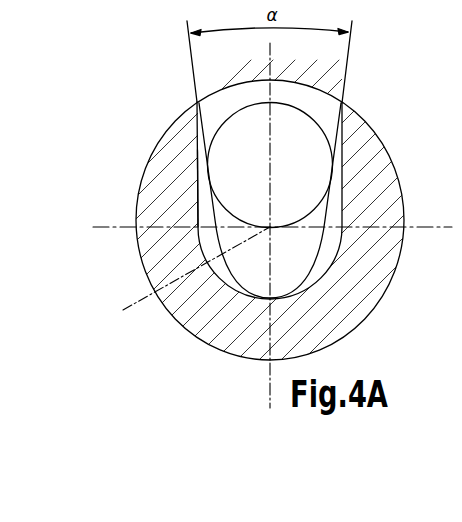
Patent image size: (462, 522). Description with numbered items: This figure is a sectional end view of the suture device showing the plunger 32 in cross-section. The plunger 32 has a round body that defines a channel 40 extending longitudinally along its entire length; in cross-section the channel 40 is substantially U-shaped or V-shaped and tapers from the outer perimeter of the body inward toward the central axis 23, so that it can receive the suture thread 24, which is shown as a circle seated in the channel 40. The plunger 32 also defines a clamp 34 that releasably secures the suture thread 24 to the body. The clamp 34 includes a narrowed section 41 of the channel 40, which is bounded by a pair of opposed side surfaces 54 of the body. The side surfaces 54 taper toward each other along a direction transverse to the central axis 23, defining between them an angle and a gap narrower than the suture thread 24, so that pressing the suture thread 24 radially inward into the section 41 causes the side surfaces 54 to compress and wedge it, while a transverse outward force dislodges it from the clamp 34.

The central axis 23 is at (181, 275).
The suture thread 24 is at (245, 142).
The plunger 32 is at (238, 320).
The clamp 34 is at (194, 242).
The channel 40 is at (333, 263).
The section of the channel 41 is at (298, 265).
The side surfaces 54 is at (188, 162).